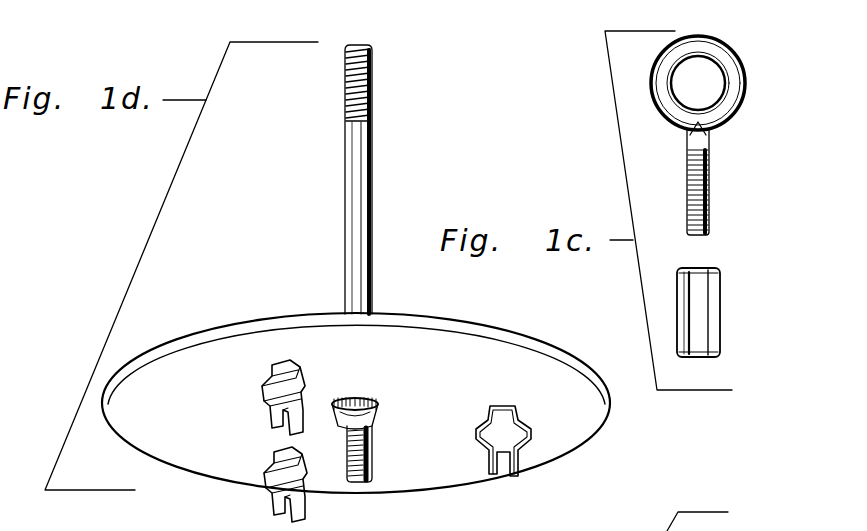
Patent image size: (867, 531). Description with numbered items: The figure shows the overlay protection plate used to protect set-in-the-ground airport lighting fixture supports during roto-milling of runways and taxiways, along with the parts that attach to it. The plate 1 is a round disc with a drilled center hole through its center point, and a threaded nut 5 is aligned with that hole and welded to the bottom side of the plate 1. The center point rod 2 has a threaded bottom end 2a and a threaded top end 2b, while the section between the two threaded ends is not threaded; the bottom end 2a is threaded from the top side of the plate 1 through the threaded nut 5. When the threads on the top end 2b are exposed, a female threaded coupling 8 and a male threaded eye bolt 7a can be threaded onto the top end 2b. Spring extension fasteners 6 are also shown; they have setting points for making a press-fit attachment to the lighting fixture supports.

In FIG. 1D, the plate 1 is at (583, 445).
In FIG. 1D, the center point rod 2 is at (373, 157).
In FIG. 1D, the bottom end 2a is at (373, 453).
In FIG. 1D, the top end 2b is at (373, 70).
In FIG. 1D, the threaded nut 5 is at (383, 415).
In FIG. 1D, the spring extension fasteners 6 is at (267, 377).
In FIG. 1C, the male threaded eye bolt 7a is at (743, 62).
In FIG. 1C, the female threaded coupling 8 is at (721, 298).